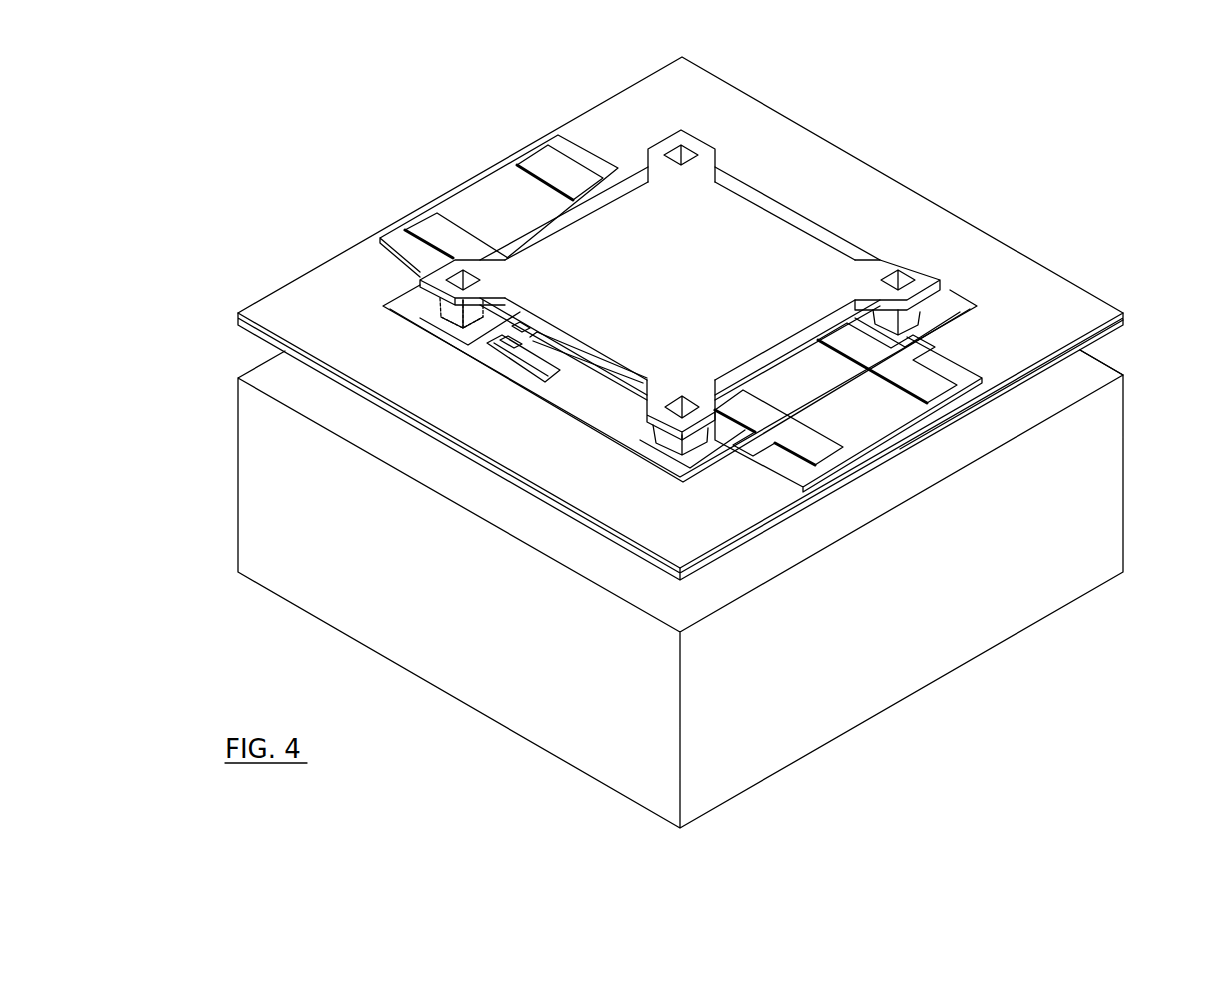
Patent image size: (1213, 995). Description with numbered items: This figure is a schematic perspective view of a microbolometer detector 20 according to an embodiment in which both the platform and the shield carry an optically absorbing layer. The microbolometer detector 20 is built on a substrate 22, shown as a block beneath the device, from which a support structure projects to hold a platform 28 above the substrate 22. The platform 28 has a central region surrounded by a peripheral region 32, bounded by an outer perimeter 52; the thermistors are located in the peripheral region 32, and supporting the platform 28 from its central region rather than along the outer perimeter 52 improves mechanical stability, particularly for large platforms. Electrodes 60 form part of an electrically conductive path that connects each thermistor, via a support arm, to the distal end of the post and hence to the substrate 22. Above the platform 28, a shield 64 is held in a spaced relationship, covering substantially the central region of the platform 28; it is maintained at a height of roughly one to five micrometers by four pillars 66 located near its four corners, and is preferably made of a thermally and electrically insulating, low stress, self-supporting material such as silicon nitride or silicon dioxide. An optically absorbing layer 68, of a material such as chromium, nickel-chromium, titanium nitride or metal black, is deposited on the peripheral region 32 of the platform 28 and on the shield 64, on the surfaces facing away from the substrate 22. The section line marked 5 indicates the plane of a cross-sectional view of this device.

The section line 5- 5 is at (947, 162).
The microbolometer detector 20 is at (1043, 110).
The substrate 22 is at (742, 725).
The platform 28 is at (236, 314).
The peripheral region 32 is at (1018, 266).
The outer perimeter 52 is at (1122, 329).
The electrode 60 is at (510, 340).
The shield 64 is at (733, 207).
The pillar 66 is at (925, 312).
The optically absorbing layer 68 is at (352, 328).